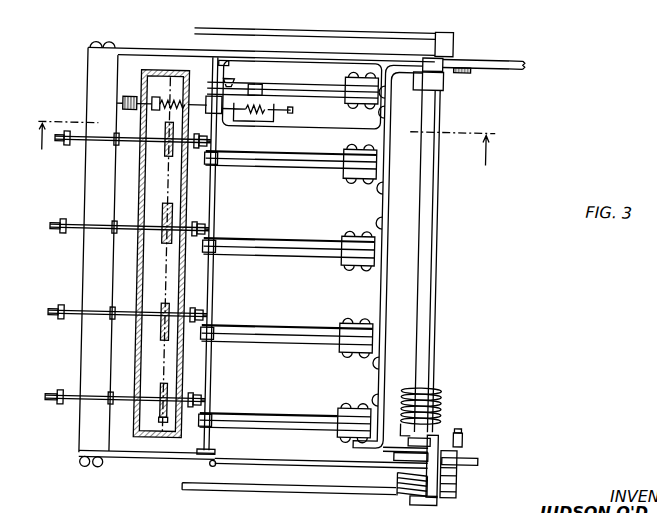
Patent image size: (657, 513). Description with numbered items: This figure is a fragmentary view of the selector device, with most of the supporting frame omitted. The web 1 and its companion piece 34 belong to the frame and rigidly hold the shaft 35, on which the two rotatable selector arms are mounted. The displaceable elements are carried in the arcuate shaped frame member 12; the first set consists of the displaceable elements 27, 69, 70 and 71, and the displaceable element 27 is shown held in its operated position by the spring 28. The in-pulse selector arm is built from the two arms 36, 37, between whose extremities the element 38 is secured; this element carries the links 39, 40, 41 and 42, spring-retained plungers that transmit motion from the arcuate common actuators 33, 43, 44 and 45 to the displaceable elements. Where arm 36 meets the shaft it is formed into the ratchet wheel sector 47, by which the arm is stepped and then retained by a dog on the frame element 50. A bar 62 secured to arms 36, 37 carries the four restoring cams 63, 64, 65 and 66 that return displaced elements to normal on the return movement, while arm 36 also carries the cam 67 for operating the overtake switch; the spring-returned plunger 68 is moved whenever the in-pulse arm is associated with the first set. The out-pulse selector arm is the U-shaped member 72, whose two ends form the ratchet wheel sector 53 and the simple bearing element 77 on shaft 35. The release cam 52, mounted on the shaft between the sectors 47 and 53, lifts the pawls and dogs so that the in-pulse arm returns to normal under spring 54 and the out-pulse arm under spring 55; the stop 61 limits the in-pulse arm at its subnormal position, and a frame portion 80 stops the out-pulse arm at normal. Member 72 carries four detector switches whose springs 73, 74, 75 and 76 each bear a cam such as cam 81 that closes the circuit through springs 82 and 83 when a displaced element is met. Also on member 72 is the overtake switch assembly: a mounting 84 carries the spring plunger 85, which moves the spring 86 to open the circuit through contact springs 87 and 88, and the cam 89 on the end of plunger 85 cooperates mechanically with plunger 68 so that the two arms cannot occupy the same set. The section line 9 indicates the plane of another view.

The web 1 is at (266, 484).
The section line 9- 9 is at (266, 146).
The arcuate shaped frame member 12 is at (182, 358).
The displaceable element 27 is at (158, 398).
The spring 28 is at (165, 419).
The arcuate common actuator 33 is at (53, 406).
The companion piece 34 is at (297, 32).
The shaft 35 is at (428, 253).
The arm 36 is at (297, 458).
The arm 37 is at (264, 58).
The element 38 is at (86, 435).
The link 39 is at (70, 408).
The link 40 is at (69, 321).
The link 41 is at (69, 232).
The link 42 is at (69, 148).
The arcuate common actuator 43 is at (53, 320).
The arcuate common actuator 44 is at (54, 232).
The arcuate common actuator 45 is at (57, 146).
The ratchet wheel sector 47 is at (468, 463).
The element 50 is at (451, 492).
The release cam 52 is at (486, 452).
The ratchet wheel sector 53 is at (470, 432).
The spring 54 is at (405, 470).
The spring 55 is at (447, 392).
The stop 61 is at (449, 40).
The bar 62 is at (217, 281).
The cam 63 is at (208, 399).
The cam 64 is at (208, 313).
The cam 65 is at (208, 227).
The cam 66 is at (208, 139).
The cam 67 is at (127, 97).
The plunger 68 is at (172, 96).
The displaceable element 69 is at (148, 314).
The displaceable element 70 is at (152, 229).
The displaceable element 71 is at (153, 142).
The U-shaped member 72 is at (383, 288).
The detector contact spring 73 is at (328, 413).
The detector contact spring 74 is at (292, 325).
The detector contact spring 75 is at (323, 238).
The detector contact spring 76 is at (323, 151).
The bearing element 77 is at (461, 68).
The portion of the frame 80 is at (446, 438).
The cam 81 is at (199, 398).
The spring 82 is at (294, 420).
The spring 83 is at (265, 413).
The mounting 84 is at (296, 123).
The spring plunger 85 is at (281, 108).
The spring 86 is at (258, 96).
The contact spring 87 is at (288, 95).
The contact spring 88 is at (331, 82).
The cam 89 is at (198, 133).